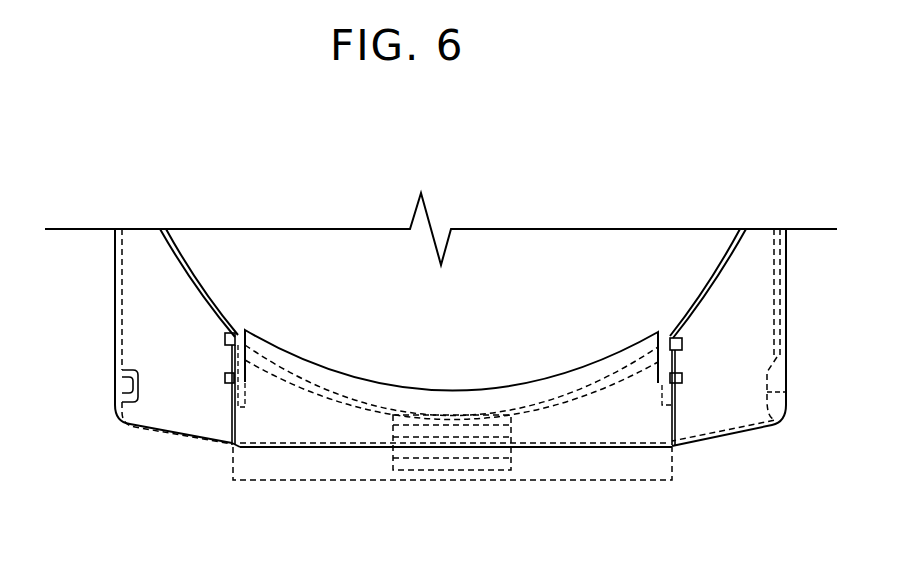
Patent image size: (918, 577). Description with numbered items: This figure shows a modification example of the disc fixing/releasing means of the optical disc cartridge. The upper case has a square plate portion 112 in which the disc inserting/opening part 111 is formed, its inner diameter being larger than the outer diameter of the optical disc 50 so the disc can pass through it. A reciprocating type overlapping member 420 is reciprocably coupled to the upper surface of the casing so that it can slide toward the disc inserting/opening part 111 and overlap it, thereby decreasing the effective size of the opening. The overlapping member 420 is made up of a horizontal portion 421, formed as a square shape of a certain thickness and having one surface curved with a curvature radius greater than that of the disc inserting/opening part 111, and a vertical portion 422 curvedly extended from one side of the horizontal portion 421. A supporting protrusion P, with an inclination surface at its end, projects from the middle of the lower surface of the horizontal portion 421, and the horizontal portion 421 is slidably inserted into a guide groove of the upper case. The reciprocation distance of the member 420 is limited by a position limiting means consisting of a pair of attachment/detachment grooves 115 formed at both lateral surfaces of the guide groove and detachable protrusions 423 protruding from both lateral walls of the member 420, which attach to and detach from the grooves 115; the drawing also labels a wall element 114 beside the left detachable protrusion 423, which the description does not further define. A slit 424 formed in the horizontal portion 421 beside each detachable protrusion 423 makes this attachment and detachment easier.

The optical disc 50 is at (740, 263).
The disc inserting/opening part 111 is at (190, 282).
The plate portion 112 is at (741, 413).
The first support 114 is at (232, 356).
The attachment/detachment grooves 115 is at (683, 376).
The reciprocating type overlapping member 420 is at (287, 458).
The horizontal portion 421 is at (640, 418).
The vertical portion 422 is at (574, 448).
The detachable protrusions 423 is at (226, 342).
The slit 424 is at (240, 363).
The supporting protrusion P is at (457, 433).